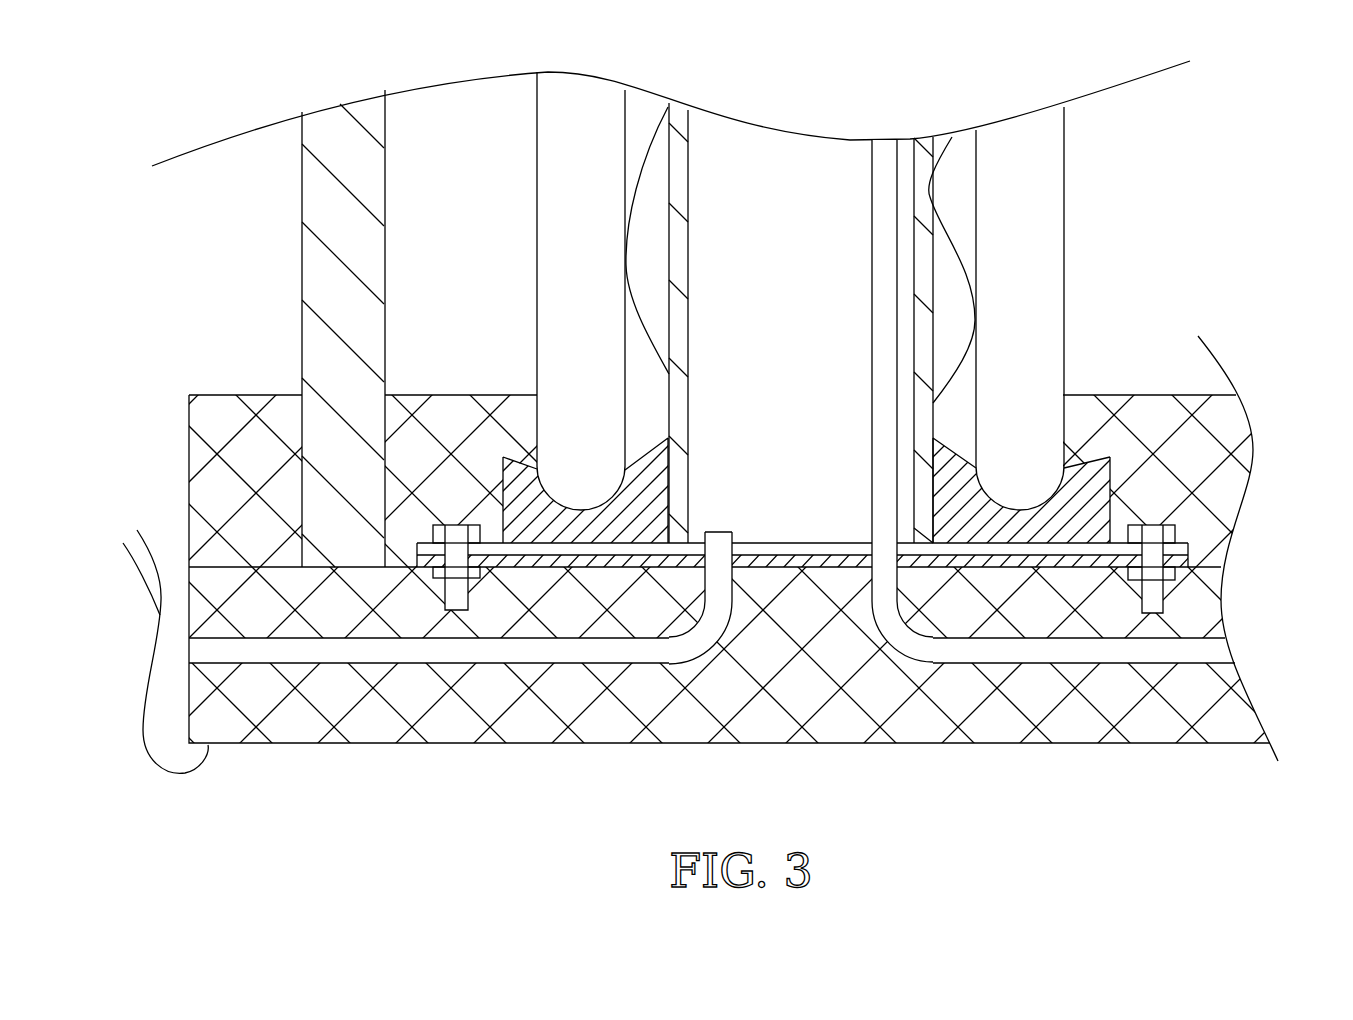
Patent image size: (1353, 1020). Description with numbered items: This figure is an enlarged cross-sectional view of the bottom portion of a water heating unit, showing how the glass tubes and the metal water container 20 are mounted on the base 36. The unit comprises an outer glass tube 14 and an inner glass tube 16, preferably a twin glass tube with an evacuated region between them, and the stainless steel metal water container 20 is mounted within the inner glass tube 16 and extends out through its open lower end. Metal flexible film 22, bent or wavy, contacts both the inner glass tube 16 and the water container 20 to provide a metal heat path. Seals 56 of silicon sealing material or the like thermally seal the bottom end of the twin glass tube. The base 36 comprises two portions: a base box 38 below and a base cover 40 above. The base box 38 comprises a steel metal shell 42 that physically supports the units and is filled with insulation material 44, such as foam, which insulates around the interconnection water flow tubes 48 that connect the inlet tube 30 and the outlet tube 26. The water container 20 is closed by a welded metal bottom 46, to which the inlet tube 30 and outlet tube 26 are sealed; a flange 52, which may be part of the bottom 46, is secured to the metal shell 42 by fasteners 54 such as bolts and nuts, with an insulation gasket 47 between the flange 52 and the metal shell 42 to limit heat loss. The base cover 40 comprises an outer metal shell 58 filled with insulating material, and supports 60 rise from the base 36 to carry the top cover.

The outer glass tube 14 is at (537, 258).
The inner glass tube 16 is at (625, 185).
The metal water container 20 is at (682, 190).
The metal flexible film 22 is at (668, 147).
The outlet tube 26 is at (898, 312).
The inlet tube 30 is at (715, 530).
The base 36 is at (1309, 419).
The base box 38 is at (268, 780).
The base cover 40 is at (136, 419).
The metal shell 42 is at (220, 565).
The insulation material 44 is at (803, 687).
The metal bottom 46 is at (777, 543).
The insulation gasket 47 is at (777, 560).
The interconnection water flow tube 48 is at (418, 650).
The flange 52 is at (555, 565).
The fastener 54 is at (455, 598).
The seal 56 is at (500, 458).
The shell 58 is at (232, 394).
The support 60 is at (318, 270).